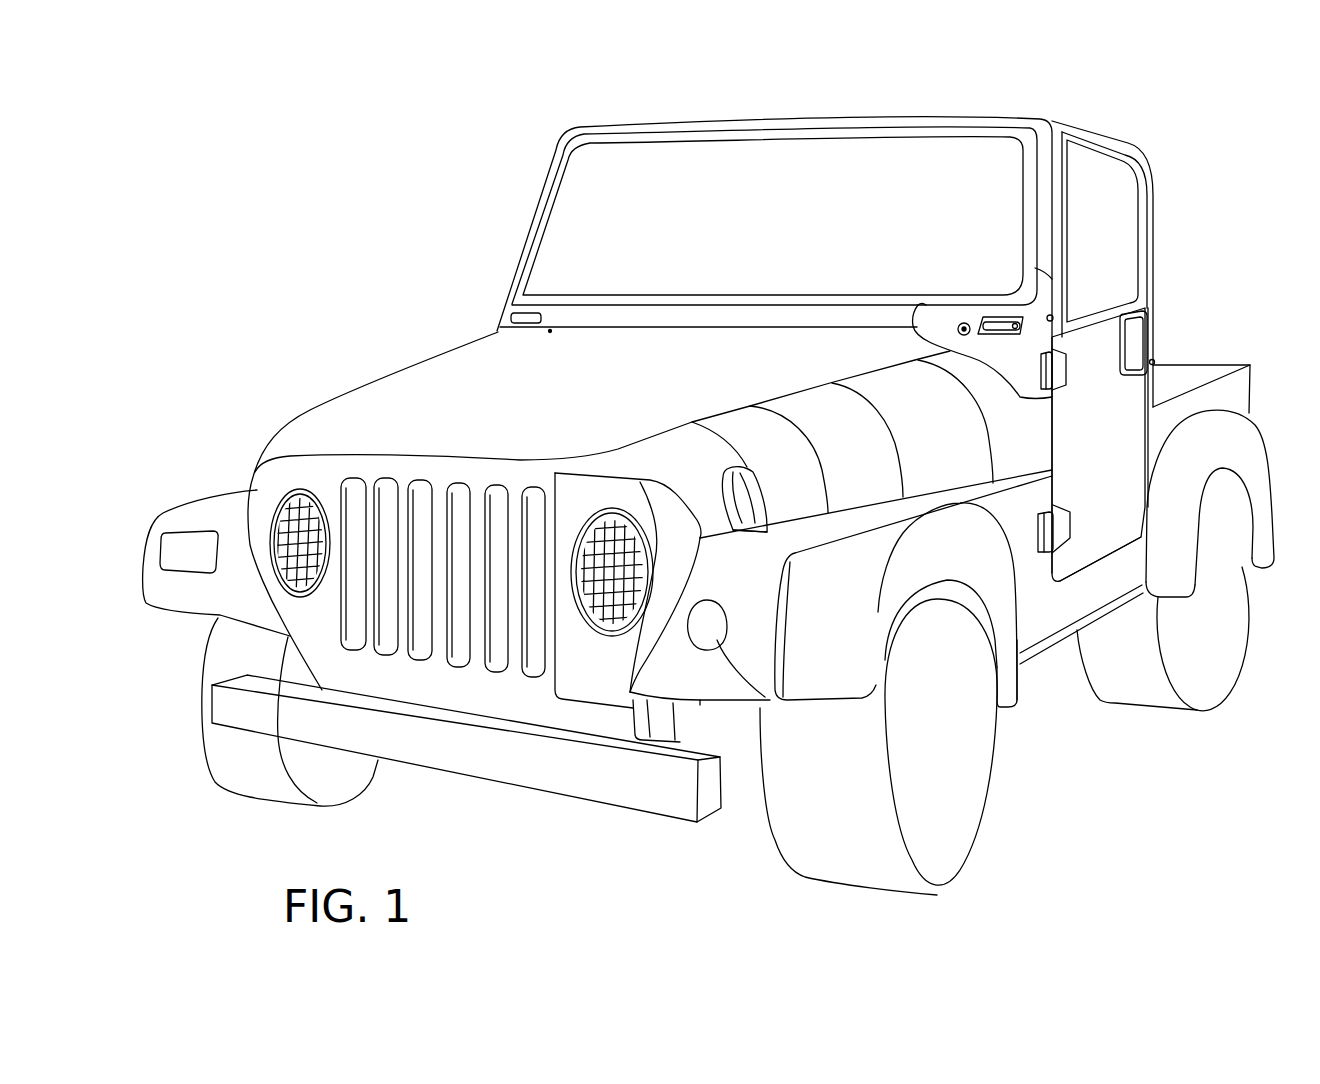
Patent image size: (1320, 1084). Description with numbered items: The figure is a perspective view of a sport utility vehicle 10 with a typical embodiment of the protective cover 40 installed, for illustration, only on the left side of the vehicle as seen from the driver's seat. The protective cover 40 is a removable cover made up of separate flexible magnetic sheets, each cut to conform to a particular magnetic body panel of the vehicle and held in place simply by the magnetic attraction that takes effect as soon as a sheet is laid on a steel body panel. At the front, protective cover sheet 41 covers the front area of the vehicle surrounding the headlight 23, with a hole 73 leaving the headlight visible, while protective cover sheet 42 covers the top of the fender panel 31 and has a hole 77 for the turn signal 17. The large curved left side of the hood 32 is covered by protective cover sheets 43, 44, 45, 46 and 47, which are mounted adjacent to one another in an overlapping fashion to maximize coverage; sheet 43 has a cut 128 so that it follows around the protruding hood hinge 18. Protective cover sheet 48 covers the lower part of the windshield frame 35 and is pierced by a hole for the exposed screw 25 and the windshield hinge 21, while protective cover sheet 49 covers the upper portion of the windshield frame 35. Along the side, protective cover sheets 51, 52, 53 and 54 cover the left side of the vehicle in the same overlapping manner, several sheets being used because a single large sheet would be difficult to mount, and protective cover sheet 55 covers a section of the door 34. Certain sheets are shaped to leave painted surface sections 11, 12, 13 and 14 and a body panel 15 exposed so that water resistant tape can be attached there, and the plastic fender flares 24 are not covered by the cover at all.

The vehicle 10 is at (245, 462).
The painted surface section 11 is at (627, 465).
The painted surface section 12 is at (578, 718).
The painted surface section 13 is at (760, 712).
The painted surface section 14 is at (950, 500).
The body panel 15 is at (1057, 637).
The turn signal 17 is at (712, 620).
The hood hinge 18 is at (763, 527).
The windshield hinge 21 is at (998, 320).
The headlight 23 is at (578, 590).
The fender flares 24 is at (1007, 685).
The exposed screw 25 is at (962, 321).
The fender panel 31 is at (877, 527).
The hood 32 is at (522, 383).
The door 34 is at (1154, 264).
The windshield frame 35 is at (650, 317).
The protective cover 40 is at (1031, 106).
The protective cover sheet 41 is at (555, 483).
The protective cover sheet 42 is at (727, 680).
The protective cover sheet 43 is at (683, 457).
The protective cover sheet 44 is at (740, 425).
The protective cover sheet 45 is at (800, 400).
The protective cover sheet 46 is at (873, 382).
The protective cover sheet 47 is at (910, 335).
The protective cover sheet 48 is at (905, 325).
The protective cover sheet 49 is at (998, 121).
The protective cover sheet 51 is at (1030, 627).
The protective cover sheet 52 is at (1102, 593).
The protective cover sheet 53 is at (1165, 410).
The protective cover sheet 54 is at (1263, 360).
The protective cover sheet 55 is at (1097, 340).
The hole 73 is at (613, 637).
The hole 77 is at (783, 680).
The cut 128 is at (737, 538).